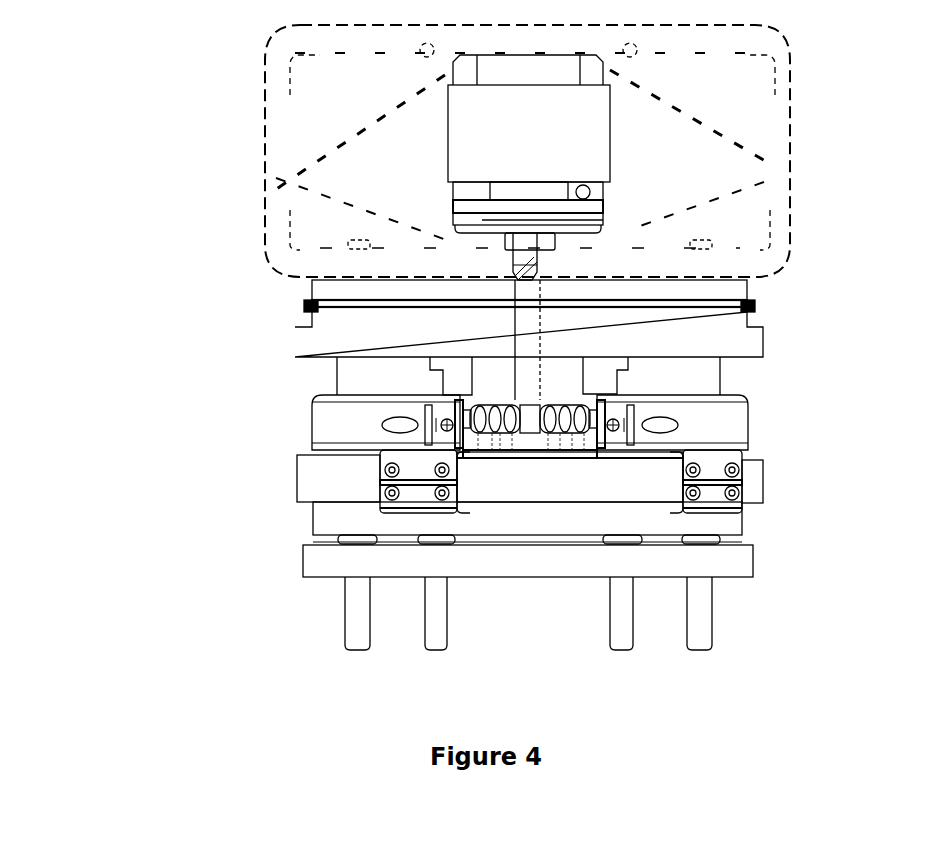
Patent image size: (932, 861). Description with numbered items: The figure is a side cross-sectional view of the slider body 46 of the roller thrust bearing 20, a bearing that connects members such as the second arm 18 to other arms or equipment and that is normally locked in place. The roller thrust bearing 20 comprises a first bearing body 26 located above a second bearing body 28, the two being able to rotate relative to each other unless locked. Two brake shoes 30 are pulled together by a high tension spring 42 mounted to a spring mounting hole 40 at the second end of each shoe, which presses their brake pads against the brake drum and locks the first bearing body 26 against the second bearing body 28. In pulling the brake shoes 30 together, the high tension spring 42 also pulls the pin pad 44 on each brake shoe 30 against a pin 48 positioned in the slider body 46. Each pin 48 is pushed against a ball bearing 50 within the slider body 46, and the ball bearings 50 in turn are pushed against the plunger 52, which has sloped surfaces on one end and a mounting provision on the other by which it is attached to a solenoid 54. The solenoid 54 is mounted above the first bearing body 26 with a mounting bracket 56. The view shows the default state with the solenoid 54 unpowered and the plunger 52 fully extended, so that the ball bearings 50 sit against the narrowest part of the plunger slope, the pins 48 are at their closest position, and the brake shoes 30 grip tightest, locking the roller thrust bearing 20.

The second arm 18 is at (783, 80).
The roller thrust bearing 20 is at (180, 326).
The first bearing body 26 is at (743, 337).
The second bearing body 28 is at (733, 560).
The brake shoe 30 is at (338, 427).
The spring mounting hole 40 is at (440, 420).
The high tension spring 42 is at (432, 425).
The pin pad 44 is at (447, 495).
The slider body 46 is at (622, 366).
The pin 48 is at (505, 440).
The ball bearing 50 is at (542, 440).
The plunger 52 is at (525, 330).
The solenoid 54 is at (537, 135).
The mounting bracket 56 is at (538, 72).